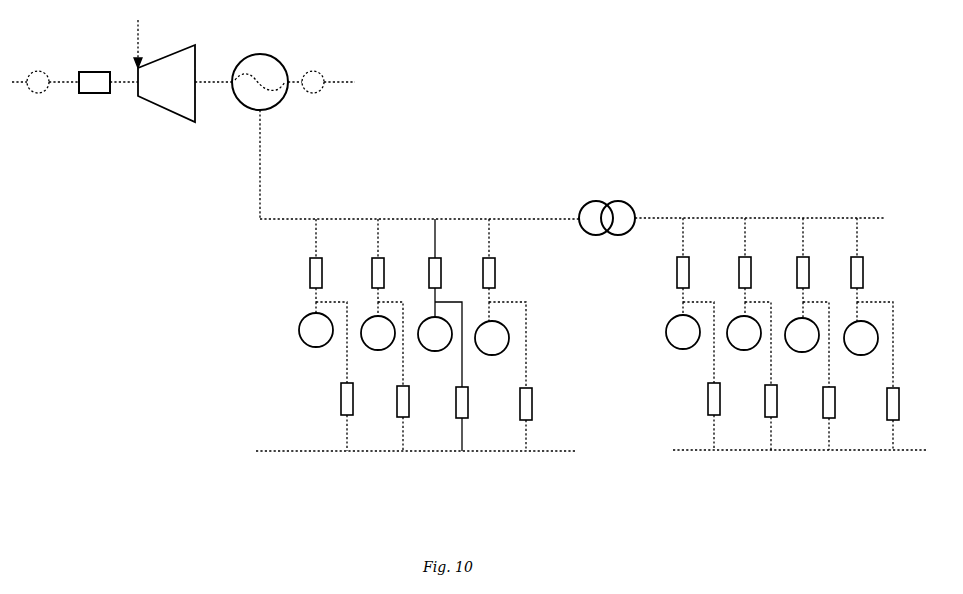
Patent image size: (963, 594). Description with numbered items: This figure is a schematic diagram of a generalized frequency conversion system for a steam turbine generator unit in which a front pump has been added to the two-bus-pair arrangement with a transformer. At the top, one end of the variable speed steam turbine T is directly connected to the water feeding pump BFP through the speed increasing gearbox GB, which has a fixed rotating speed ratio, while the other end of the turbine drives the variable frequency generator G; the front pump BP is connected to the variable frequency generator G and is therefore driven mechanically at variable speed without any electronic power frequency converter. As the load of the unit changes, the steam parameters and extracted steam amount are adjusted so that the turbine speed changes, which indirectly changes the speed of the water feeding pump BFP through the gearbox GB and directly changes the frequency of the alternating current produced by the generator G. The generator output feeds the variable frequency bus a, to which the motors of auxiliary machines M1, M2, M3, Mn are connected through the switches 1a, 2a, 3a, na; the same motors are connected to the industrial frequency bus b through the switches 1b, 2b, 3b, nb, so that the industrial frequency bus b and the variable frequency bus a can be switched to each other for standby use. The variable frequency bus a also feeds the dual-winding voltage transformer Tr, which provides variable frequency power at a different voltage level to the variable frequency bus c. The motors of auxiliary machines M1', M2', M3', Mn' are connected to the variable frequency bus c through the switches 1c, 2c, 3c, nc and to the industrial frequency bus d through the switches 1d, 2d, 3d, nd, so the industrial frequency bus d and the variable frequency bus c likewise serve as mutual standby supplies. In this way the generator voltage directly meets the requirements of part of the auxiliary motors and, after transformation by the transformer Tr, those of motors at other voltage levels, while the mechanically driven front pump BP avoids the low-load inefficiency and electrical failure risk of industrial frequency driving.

The water feeding pump BFP is at (37, 82).
The speed increasing gearbox GB is at (94, 82).
The variable speed steam turbine T is at (164, 71).
The variable frequency generator G is at (260, 82).
The front pump BP is at (313, 82).
The dual-winding voltage transformer Tr is at (607, 206).
The variable frequency bus a is at (419, 206).
The industrial frequency bus b is at (415, 463).
The variable frequency bus c is at (760, 205).
The industrial frequency bus d is at (800, 462).
The switch between auxiliary machine and variable frequency bus 1a is at (329, 260).
The switch between auxiliary machine and variable frequency bus 2a is at (391, 260).
The switch between auxiliary machine and variable frequency bus 3a is at (448, 260).
The switch between auxiliary machine and variable frequency bus na is at (502, 260).
The switch between auxiliary machine and industrial frequency bus 1b is at (348, 376).
The switch between auxiliary machine and industrial frequency bus 2b is at (407, 376).
The switch between auxiliary machine and industrial frequency bus 3b is at (465, 376).
The switch between auxiliary machine and industrial frequency bus nb is at (524, 376).
The switch between auxiliary machine and variable frequency bus 1c is at (696, 260).
The switch between auxiliary machine and variable frequency bus 2c is at (758, 260).
The switch between auxiliary machine and variable frequency bus 3c is at (816, 260).
The switch between auxiliary machine and variable frequency bus nc is at (870, 260).
The switch between auxiliary machine and industrial frequency bus 1d is at (715, 376).
The switch between auxiliary machine and industrial frequency bus 2d is at (775, 376).
The switch between auxiliary machine and industrial frequency bus 3d is at (833, 376).
The switch between auxiliary machine and industrial frequency bus nd is at (892, 376).
The motor of auxiliary machine M1 is at (316, 324).
The motor of auxiliary machine M2 is at (378, 326).
The motor of auxiliary machine M3 is at (435, 326).
The motor of auxiliary machine Mn is at (492, 328).
The motor of auxiliary machine M1' is at (683, 325).
The motor of auxiliary machine M2' is at (744, 326).
The motor of auxiliary machine M3' is at (802, 327).
The motor of auxiliary machine Mn' is at (861, 328).